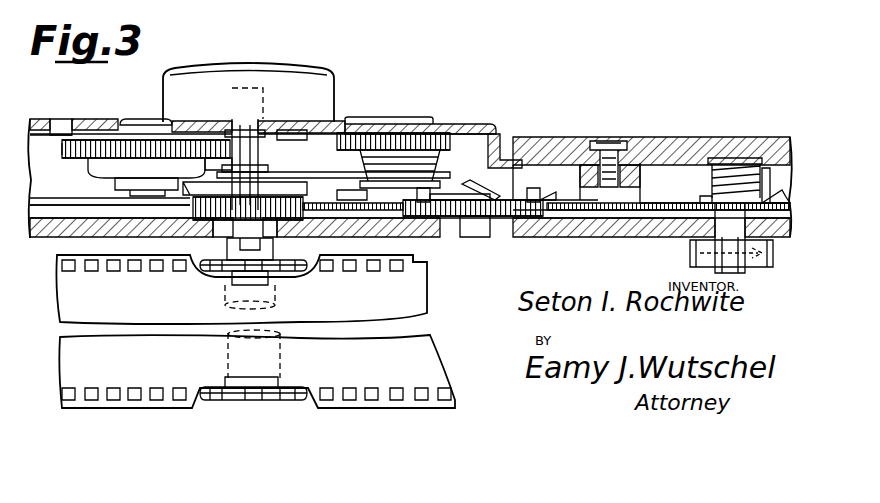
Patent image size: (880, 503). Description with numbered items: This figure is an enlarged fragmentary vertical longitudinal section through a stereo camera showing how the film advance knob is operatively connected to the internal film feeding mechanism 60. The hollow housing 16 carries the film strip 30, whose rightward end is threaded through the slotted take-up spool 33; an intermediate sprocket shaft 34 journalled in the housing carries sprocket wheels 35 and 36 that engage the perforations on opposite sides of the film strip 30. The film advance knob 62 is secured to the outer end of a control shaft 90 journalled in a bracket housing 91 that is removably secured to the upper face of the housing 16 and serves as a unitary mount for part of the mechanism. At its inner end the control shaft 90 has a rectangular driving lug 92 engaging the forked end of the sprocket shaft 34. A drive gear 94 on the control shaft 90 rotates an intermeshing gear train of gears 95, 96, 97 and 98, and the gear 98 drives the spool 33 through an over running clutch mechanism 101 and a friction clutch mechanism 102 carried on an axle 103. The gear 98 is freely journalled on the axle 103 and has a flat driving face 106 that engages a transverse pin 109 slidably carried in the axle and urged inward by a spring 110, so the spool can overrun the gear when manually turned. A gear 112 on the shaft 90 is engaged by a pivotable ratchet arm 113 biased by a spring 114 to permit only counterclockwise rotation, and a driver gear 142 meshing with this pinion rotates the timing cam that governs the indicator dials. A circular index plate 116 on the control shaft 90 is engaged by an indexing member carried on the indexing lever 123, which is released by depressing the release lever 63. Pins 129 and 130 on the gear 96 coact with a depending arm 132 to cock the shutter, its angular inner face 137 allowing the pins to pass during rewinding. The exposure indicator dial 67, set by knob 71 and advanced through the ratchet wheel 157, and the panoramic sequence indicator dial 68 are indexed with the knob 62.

The hollow housing 16 is at (555, 228).
The film strip 30 is at (410, 342).
The take-up spool 33 is at (768, 250).
The sprocket shaft 34 is at (280, 250).
The sprocket wheel 35 is at (223, 272).
The sprocket wheel 36 is at (286, 392).
The film feeding mechanism 60 is at (436, 250).
The film advance knob 62 is at (300, 64).
The release lever 63 is at (58, 125).
The exposure indicator dial 67 is at (397, 133).
The panoramic sequence indicator dial 68 is at (92, 140).
The knob 71 is at (373, 125).
The control shaft 90 is at (262, 100).
The bracket housing 91 is at (504, 122).
The driving lug 92 is at (253, 268).
The drive gear 94 is at (196, 192).
The gear 95 is at (369, 212).
The gear 96 is at (506, 222).
The gear 97 is at (622, 215).
The drive gear 98 is at (700, 200).
The over running clutch mechanism 101 is at (771, 166).
The friction clutch mechanism 102 is at (712, 259).
The axle 103 is at (725, 230).
The flat driving face 106 is at (735, 196).
The transverse pin 109 is at (765, 201).
The spring 110 is at (712, 181).
The gear 112 is at (250, 130).
The ratchet arm 113 is at (187, 164).
The spring 114 is at (342, 172).
The index plate 116 is at (212, 205).
The indexing lever 123 is at (56, 193).
The pin 129 is at (535, 196).
The pin 130 is at (432, 190).
The depending arm 132 is at (497, 188).
The angular inner face 137 is at (461, 224).
The driver gear 142 is at (63, 148).
The ratchet wheel 157 is at (432, 140).